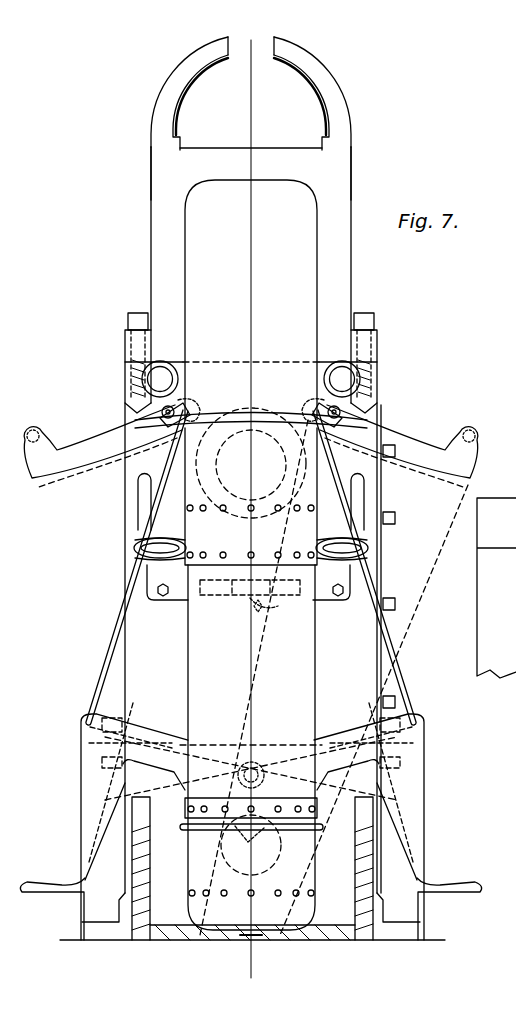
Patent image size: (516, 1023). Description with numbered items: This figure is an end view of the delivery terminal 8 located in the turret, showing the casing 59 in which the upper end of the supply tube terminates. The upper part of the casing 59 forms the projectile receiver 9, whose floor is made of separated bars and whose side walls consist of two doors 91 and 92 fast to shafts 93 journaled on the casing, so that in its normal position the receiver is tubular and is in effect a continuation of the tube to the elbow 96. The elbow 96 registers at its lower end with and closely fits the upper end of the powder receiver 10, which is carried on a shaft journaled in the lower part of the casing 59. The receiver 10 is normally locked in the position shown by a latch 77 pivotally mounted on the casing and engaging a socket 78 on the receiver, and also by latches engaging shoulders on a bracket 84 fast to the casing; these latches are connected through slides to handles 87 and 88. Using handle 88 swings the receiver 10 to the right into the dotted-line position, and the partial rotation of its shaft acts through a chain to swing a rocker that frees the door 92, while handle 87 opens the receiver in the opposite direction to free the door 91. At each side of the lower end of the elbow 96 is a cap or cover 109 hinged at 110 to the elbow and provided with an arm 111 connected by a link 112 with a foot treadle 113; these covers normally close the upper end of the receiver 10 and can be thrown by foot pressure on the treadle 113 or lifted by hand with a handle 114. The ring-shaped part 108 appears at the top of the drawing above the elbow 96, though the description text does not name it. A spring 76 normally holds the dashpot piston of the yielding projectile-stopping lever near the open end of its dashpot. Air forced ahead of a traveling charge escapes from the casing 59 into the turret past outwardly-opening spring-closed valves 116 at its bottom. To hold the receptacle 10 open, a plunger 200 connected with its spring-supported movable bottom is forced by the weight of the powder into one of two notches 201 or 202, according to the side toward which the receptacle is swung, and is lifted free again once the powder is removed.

The projectile receiver 9 is at (258, 44).
The ring 108 is at (322, 85).
The elbow 96 is at (251, 283).
The door 91 is at (160, 160).
The door 92 is at (340, 164).
The shafts 93 is at (166, 378).
The handle 114 is at (60, 414).
The cap or cover 109 is at (402, 434).
The hinge 110 is at (186, 406).
The arm 111 is at (290, 414).
The powder receiver 10 is at (298, 691).
The handle 87 is at (141, 494).
The handle 88 is at (361, 489).
The bracket 84 is at (132, 555).
The casing 59 is at (260, 648).
The link 112 is at (117, 632).
The foot treadle 113 is at (81, 766).
The outwardly-opening spring-closed valves 116 is at (196, 796).
The spring 76 is at (268, 842).
The latch 77 is at (255, 623).
The socket 78 is at (268, 616).
The notch 202 is at (298, 942).
The notch 201 is at (215, 942).
The plunger 200 is at (250, 942).
The delivery terminal 8 is at (496, 588).